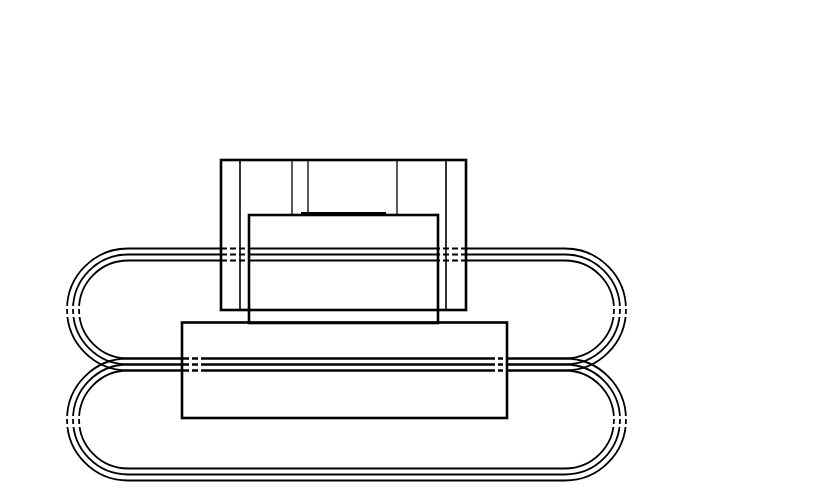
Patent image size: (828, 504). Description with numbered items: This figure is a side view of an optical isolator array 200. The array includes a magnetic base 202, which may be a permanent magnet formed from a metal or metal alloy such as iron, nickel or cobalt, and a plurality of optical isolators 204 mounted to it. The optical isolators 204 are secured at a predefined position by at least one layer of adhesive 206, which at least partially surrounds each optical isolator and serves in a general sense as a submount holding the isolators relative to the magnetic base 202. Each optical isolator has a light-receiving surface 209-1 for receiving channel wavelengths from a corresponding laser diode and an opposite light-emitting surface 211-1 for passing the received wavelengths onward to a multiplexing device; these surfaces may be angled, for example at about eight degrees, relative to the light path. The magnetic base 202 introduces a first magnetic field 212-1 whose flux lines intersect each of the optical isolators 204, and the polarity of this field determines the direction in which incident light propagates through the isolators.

The optical isolator array 200 is at (86, 106).
The magnetic base 202 is at (447, 418).
The plurality of optical isolators 204 is at (339, 179).
The layer of adhesive 206 is at (361, 228).
The light-receiving surface 209-1 is at (480, 187).
The light-emitting surface 211-1 is at (202, 208).
The first magnetic field 212-1 is at (641, 244).